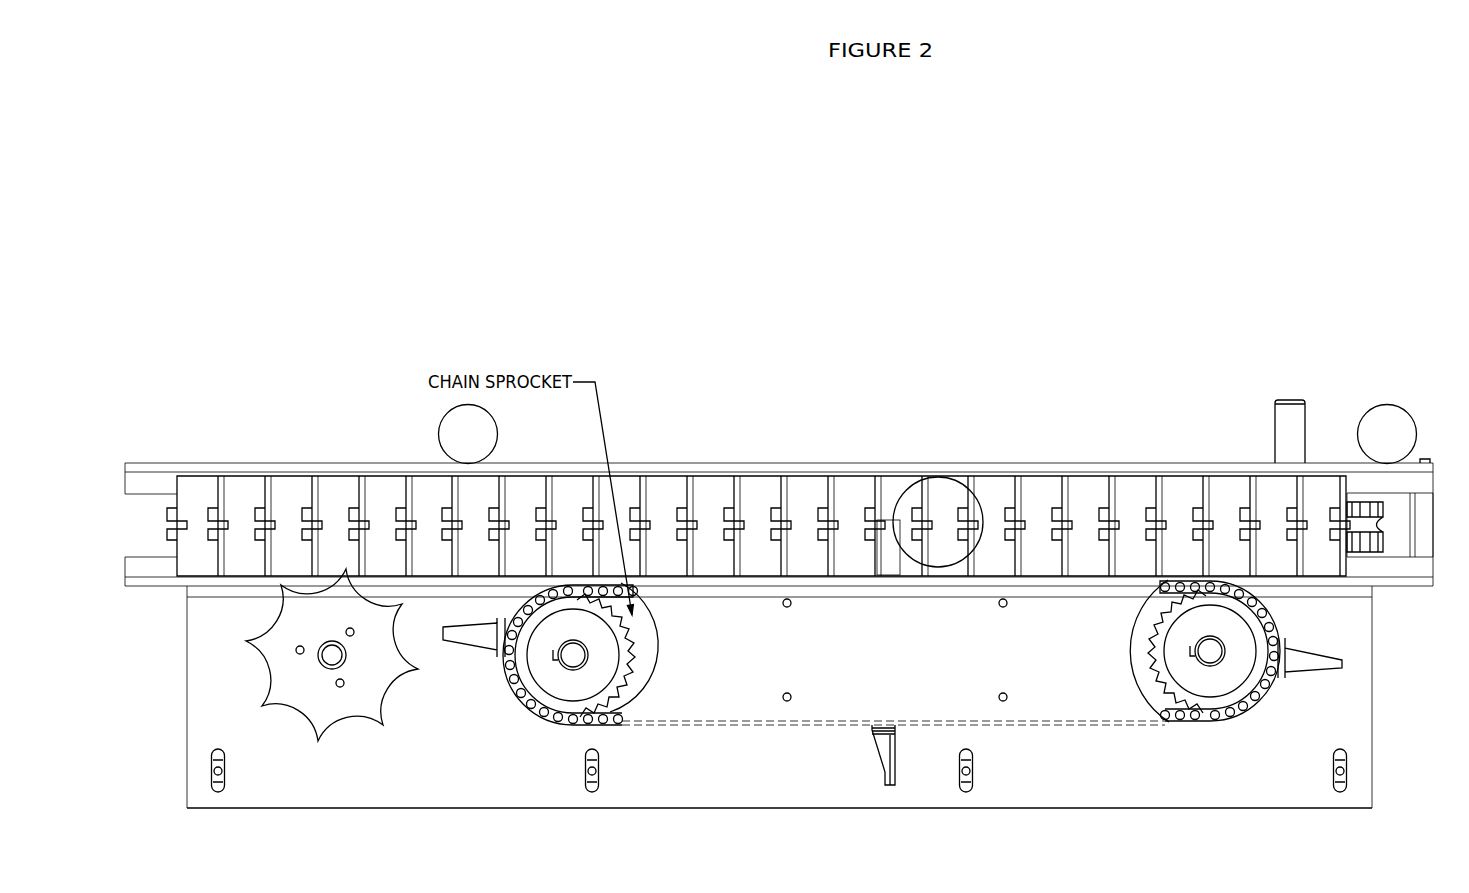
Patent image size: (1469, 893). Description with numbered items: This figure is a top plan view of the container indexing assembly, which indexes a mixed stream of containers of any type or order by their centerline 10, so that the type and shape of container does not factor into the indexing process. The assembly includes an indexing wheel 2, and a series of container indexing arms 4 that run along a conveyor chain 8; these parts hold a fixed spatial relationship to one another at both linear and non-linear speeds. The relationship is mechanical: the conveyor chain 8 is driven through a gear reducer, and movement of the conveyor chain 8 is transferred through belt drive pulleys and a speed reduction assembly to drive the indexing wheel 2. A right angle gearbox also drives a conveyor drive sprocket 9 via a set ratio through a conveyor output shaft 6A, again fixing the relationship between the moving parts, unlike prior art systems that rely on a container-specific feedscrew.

The indexing wheel 2 is at (297, 722).
The container indexing arms 4 is at (480, 637).
The conveyor output shaft 6A is at (1296, 400).
The conveyor chain 8 is at (1225, 720).
The conveyor drive sprocket 9 is at (1372, 500).
The centerline 10 is at (779, 436).